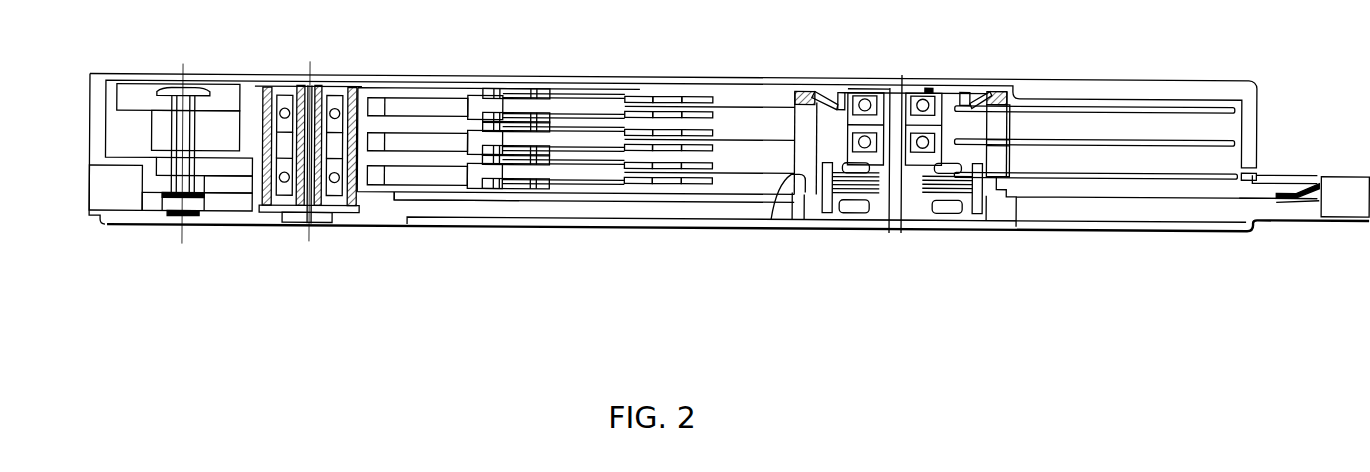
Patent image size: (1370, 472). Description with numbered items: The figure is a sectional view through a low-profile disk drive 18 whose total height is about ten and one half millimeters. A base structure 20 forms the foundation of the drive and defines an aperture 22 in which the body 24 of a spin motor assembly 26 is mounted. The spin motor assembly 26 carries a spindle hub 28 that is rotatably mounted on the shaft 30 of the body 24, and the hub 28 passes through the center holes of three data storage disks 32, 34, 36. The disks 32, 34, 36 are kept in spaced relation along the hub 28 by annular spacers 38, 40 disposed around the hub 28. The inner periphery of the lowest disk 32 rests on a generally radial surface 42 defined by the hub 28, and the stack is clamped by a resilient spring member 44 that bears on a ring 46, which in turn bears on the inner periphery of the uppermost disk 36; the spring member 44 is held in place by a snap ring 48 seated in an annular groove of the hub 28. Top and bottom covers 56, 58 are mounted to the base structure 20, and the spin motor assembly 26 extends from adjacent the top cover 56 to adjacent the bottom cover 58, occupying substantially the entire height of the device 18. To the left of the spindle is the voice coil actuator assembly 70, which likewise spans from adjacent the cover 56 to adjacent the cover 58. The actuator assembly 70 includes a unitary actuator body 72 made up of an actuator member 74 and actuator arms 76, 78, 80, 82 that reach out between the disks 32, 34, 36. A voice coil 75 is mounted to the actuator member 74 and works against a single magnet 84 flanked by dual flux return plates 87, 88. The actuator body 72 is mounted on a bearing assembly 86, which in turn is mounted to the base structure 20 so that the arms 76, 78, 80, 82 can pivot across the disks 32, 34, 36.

The disk drive 18 is at (312, 265).
The base structure 20 is at (586, 216).
The aperture 22 is at (800, 208).
The body 24 is at (955, 233).
The spin motor assembly 26 is at (927, 80).
The spindle hub 28 is at (975, 92).
The shaft 30 is at (889, 215).
The data storage disk 32 is at (1168, 172).
The data storage disk 34 is at (1236, 136).
The data storage disk 36 is at (1184, 101).
The annular spacer 38 is at (1008, 155).
The annular spacer 40 is at (1008, 119).
The radial surface 42 is at (775, 212).
The resilient spring member 44 is at (820, 88).
The ring 46 is at (798, 87).
The snap ring 48 is at (836, 88).
The top cover 56 is at (547, 82).
The bottom cover 58 is at (520, 225).
The voice coil actuator assembly 70 is at (258, 72).
The actuator body 72 is at (426, 208).
The actuator member 74 is at (215, 180).
The voice coil 75 is at (157, 165).
The actuator arm 76 is at (398, 190).
The actuator arm 78 is at (436, 151).
The actuator arm 80 is at (410, 118).
The actuator arm 82 is at (391, 90).
The single magnet 84 is at (158, 132).
The bearing assembly 86 is at (314, 67).
The flux return plate 87 is at (231, 206).
The flux return plate 88 is at (219, 88).